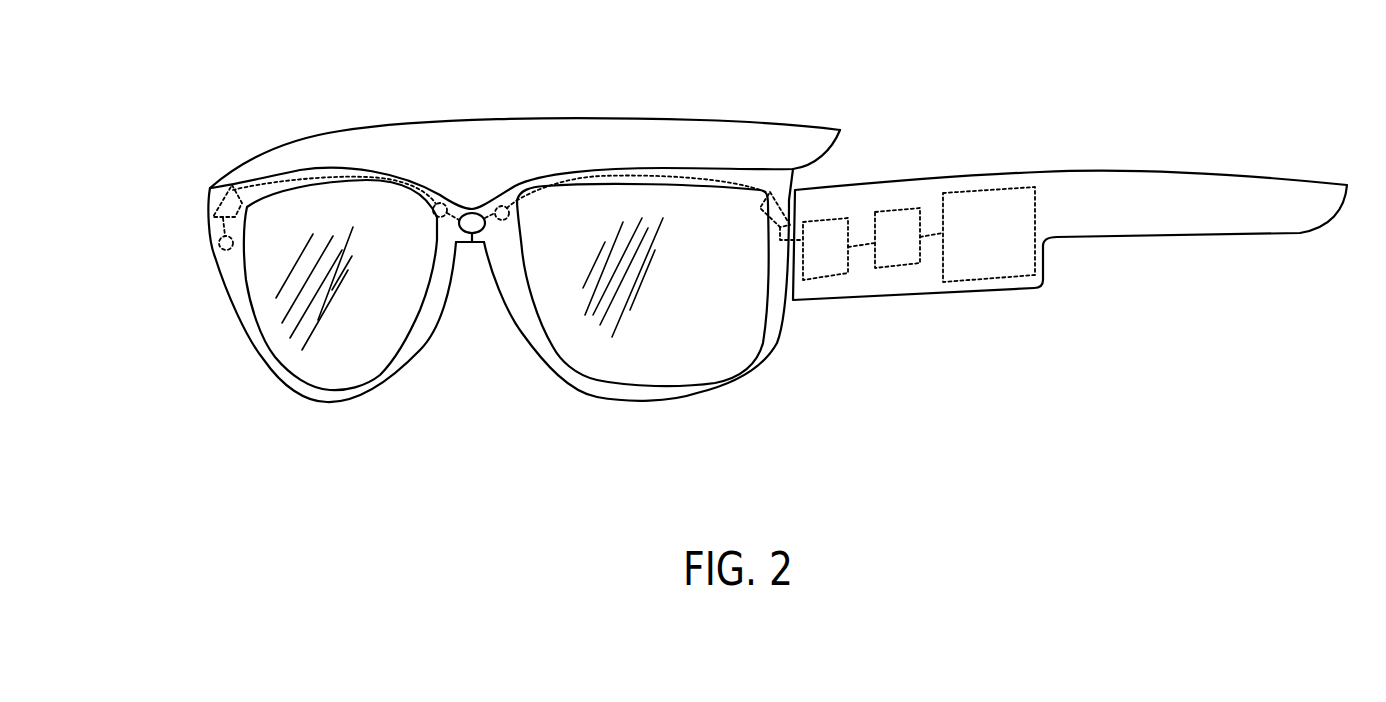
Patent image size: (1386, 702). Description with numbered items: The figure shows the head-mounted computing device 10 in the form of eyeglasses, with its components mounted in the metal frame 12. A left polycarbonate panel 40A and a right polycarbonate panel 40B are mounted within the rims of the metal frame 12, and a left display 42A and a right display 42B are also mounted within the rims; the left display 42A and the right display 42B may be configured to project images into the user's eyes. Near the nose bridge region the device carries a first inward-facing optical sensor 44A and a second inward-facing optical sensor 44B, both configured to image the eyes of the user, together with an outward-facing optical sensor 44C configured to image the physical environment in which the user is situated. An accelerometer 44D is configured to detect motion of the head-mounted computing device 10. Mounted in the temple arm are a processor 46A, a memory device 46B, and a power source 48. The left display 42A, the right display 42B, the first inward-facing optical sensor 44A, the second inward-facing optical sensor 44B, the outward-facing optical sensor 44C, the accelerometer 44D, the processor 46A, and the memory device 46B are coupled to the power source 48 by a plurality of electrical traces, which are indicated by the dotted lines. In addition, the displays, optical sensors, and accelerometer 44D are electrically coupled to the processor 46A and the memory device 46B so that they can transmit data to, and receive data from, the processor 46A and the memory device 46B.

The head-mounted computing device 10 is at (1172, 122).
The metal frame 12 is at (530, 345).
The left polycarbonate panel 40A is at (757, 360).
The right polycarbonate panel 40B is at (262, 340).
The left display 42A is at (788, 195).
The right display 42B is at (210, 188).
The first inward-facing optical sensor 44A is at (502, 206).
The second inward-facing optical sensor 44B is at (440, 203).
The outward-facing optical sensor 44C is at (474, 233).
The accelerometer 44D is at (219, 243).
The processor 46A is at (823, 277).
The memory device 46B is at (897, 267).
The power source 48 is at (990, 190).